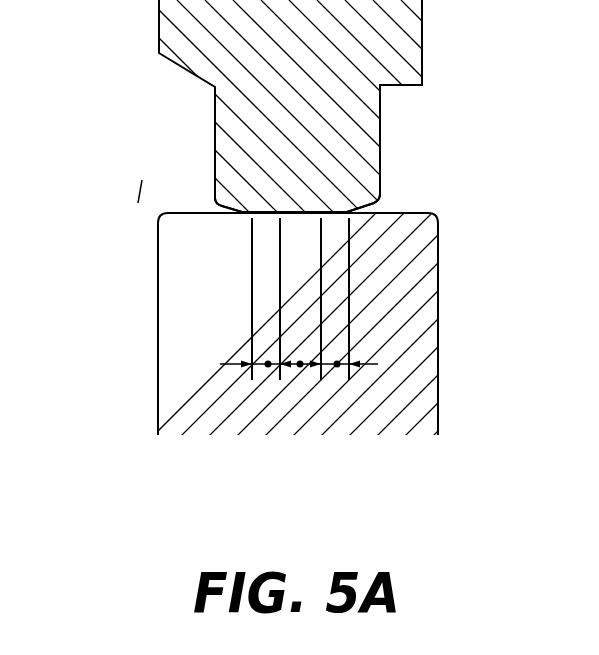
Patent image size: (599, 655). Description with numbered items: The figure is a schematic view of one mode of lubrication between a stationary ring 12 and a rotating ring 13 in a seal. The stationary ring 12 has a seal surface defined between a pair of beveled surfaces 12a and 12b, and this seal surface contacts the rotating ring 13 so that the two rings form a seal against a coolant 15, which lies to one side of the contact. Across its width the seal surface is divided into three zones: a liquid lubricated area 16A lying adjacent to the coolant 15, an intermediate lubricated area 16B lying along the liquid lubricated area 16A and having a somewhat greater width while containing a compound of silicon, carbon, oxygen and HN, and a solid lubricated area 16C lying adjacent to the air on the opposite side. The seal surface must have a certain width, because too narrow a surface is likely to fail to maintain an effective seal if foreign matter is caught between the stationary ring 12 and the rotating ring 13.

The stationary ring 12 is at (213, 123).
The beveled surface 12a is at (218, 206).
The beveled surface 12b is at (374, 203).
The rotating ring 13 is at (157, 337).
The coolant 15 is at (138, 193).
The liquid lubricated area 16A is at (268, 366).
The intermediate lubricated area 16B is at (300, 366).
The solid lubricated area 16C is at (337, 366).